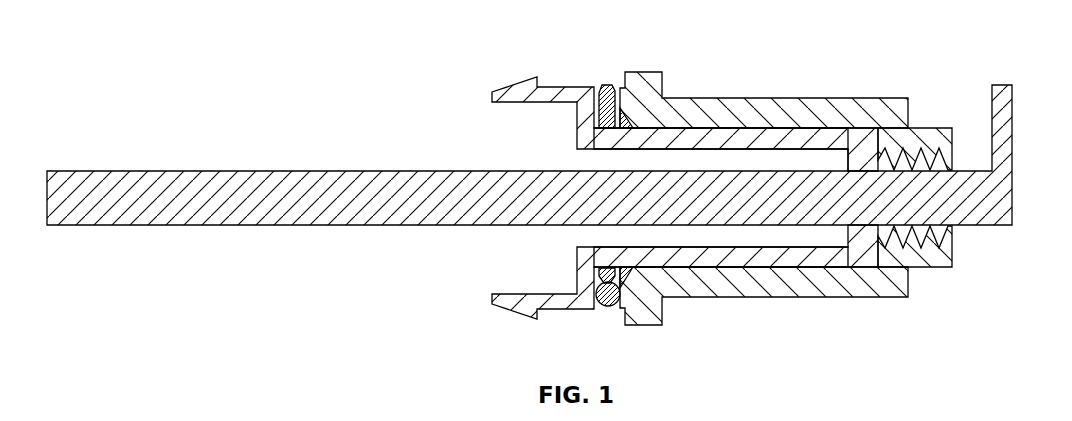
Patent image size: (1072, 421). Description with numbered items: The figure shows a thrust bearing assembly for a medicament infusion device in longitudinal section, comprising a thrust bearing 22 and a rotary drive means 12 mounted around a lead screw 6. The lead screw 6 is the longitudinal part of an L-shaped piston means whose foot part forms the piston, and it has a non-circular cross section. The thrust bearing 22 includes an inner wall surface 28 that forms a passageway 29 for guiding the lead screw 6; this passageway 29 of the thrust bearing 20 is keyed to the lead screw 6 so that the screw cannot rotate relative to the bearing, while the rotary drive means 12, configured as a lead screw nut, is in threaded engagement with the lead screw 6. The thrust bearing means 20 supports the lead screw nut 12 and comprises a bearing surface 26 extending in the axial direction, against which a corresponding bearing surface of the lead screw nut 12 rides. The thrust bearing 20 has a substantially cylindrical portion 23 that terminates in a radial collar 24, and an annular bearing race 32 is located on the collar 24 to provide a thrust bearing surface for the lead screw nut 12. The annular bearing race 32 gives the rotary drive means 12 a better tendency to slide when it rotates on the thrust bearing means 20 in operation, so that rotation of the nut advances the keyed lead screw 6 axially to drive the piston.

The lead screw 6 is at (1002, 142).
The rotary drive means 12 is at (725, 115).
The thrust bearing means 20 is at (569, 127).
The thrust bearing 22 is at (825, 258).
The substantially cylindrical portion 23 is at (665, 138).
The radial collar 24 is at (589, 101).
The bearing surface 26 is at (748, 268).
The inner wall surface 28 is at (878, 232).
The passageway 29 is at (865, 198).
The annular bearing race 32 is at (608, 298).